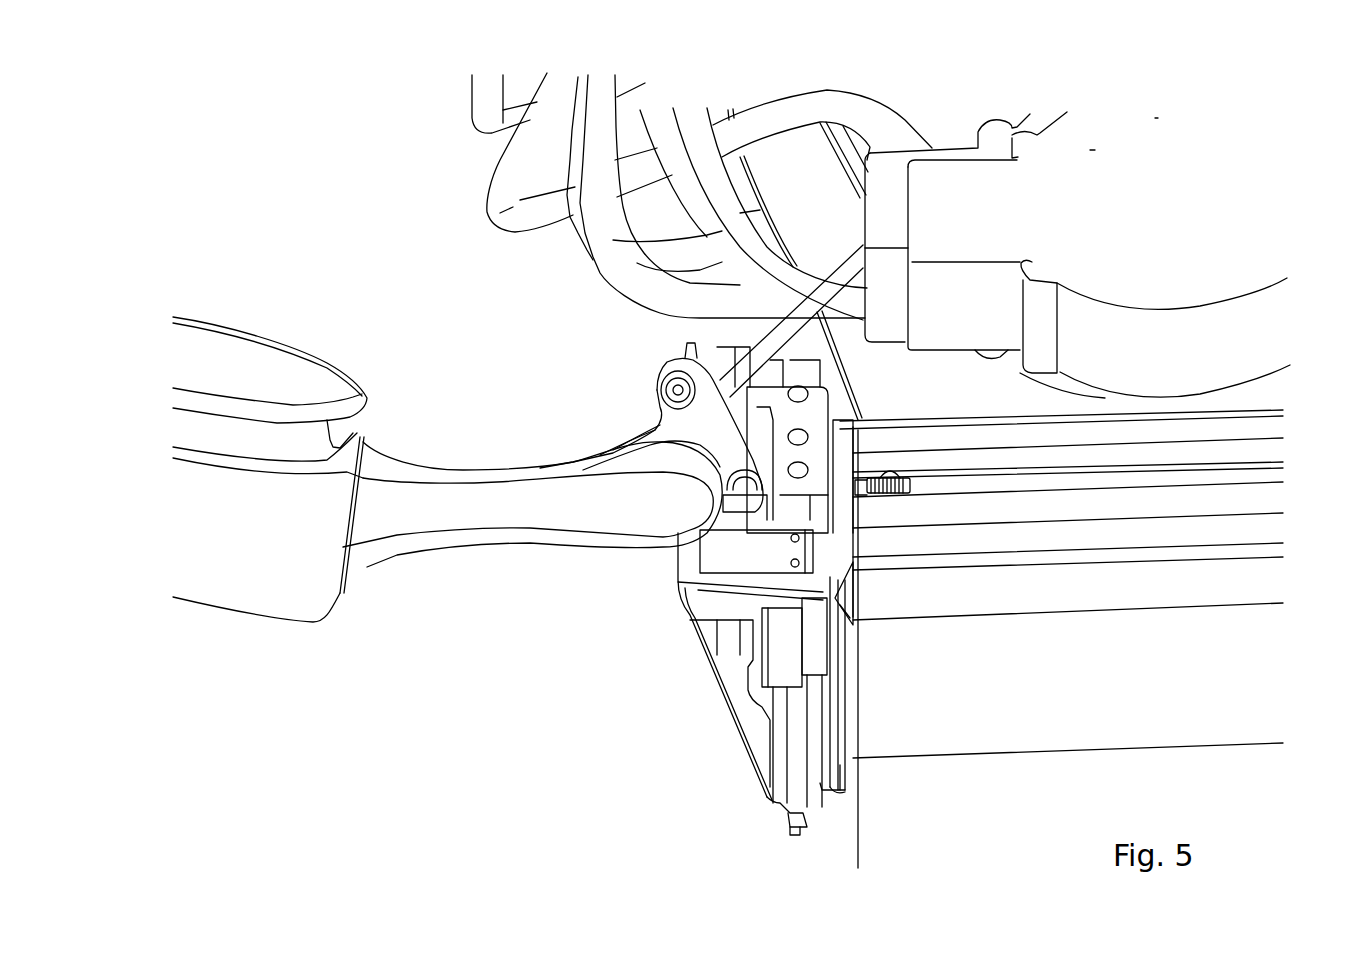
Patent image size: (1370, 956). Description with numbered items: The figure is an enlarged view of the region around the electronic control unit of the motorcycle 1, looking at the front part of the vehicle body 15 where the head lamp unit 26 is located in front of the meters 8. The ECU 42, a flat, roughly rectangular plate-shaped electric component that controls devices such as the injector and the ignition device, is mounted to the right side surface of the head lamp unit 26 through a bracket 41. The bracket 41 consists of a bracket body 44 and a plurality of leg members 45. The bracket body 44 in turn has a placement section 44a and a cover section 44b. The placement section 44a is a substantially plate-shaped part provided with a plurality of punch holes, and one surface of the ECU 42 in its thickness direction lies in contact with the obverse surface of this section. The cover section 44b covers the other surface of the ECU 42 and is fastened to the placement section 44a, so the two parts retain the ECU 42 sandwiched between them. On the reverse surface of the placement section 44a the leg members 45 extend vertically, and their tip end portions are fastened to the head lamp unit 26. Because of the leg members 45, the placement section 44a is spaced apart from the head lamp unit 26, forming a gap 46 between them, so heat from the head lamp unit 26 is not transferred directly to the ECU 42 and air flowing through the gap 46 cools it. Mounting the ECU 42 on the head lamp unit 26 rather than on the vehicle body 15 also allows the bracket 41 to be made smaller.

The motorcycle 1 is at (1160, 112).
The meters 8 is at (953, 182).
The vehicle body 15 is at (1100, 145).
The head lamp unit 26 is at (874, 836).
The bracket 41 is at (860, 545).
The electronic control unit (ECU) 42 is at (712, 608).
The bracket body 44 is at (850, 675).
The placement section 44a is at (860, 731).
The cover section 44b is at (745, 397).
The leg members 45 is at (884, 424).
The gap 46 is at (848, 762).